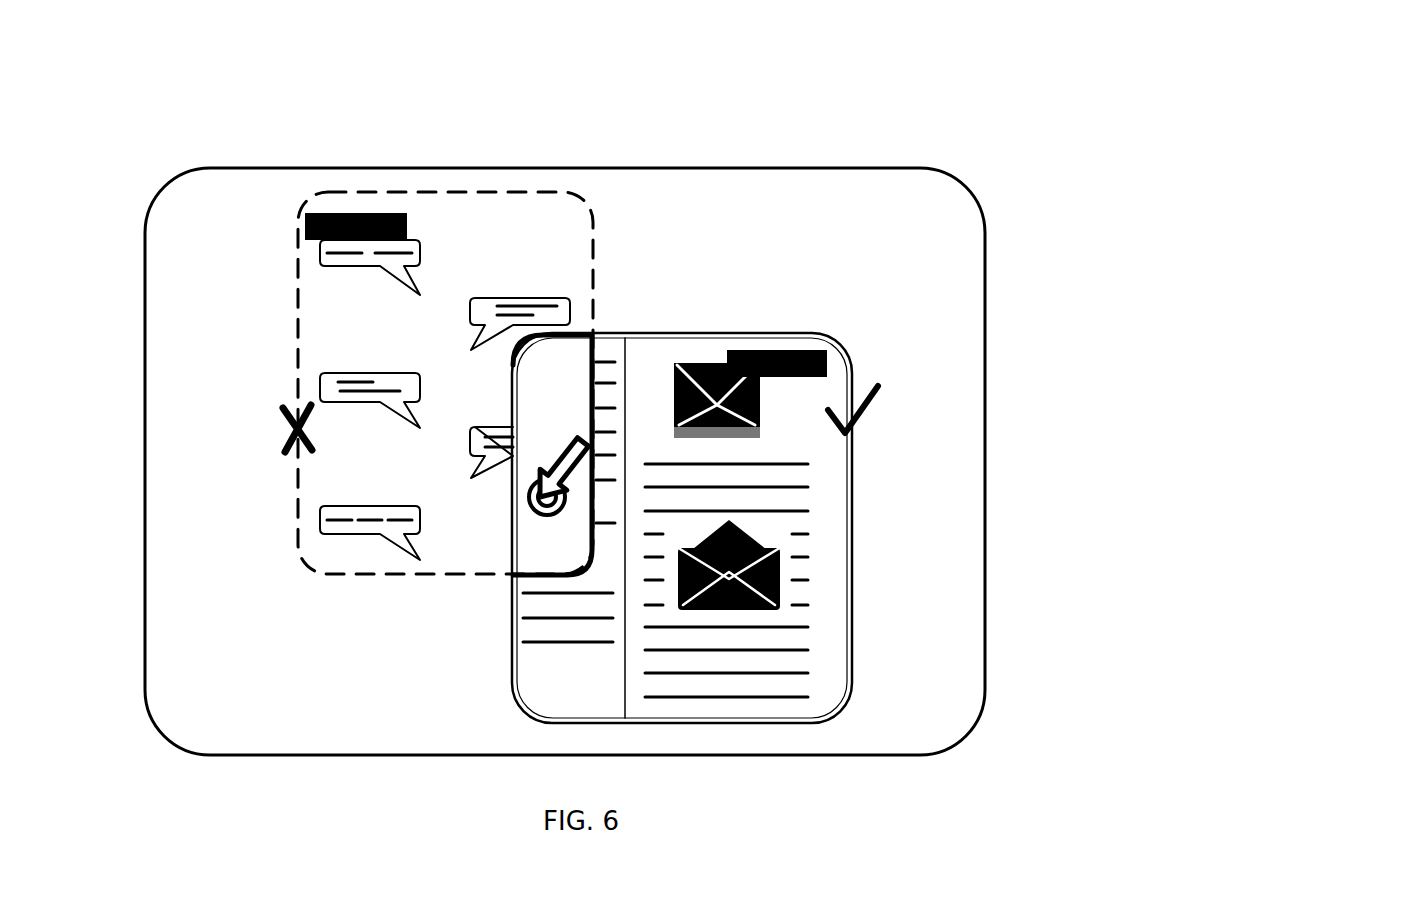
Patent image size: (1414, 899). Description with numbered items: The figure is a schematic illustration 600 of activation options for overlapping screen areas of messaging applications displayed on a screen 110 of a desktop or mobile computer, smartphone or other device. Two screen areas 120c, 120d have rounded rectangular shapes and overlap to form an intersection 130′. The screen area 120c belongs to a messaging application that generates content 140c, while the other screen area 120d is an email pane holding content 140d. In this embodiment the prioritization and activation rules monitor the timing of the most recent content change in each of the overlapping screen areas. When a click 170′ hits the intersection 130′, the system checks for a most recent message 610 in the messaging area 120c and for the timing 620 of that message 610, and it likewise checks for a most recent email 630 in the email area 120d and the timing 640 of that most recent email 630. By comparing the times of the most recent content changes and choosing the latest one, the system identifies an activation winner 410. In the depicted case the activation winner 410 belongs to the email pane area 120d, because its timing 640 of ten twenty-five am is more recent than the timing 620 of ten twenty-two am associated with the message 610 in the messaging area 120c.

The screen 110 is at (163, 190).
The screen area 120c is at (415, 188).
The screen area 120d is at (633, 335).
The intersection 130′ is at (552, 455).
The content 140c is at (445, 400).
The content 140d is at (761, 469).
The click 170′ is at (545, 515).
The activation winner 410 is at (850, 590).
The schematic illustration 600 is at (1407, 93).
The most recent message 610 is at (338, 270).
The timing 620 is at (305, 228).
The most recent email 630 is at (685, 362).
The timing 640 is at (780, 335).